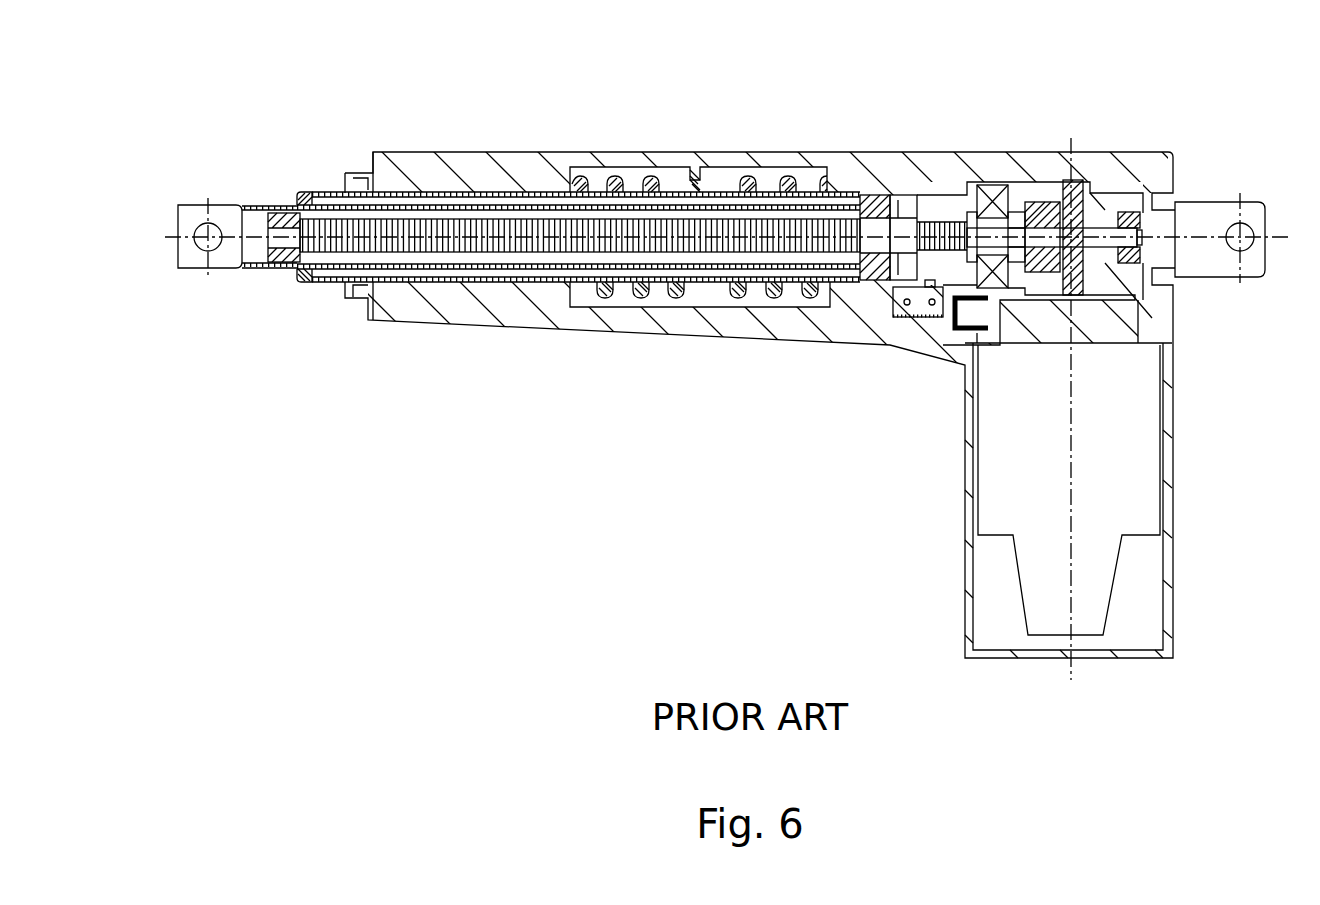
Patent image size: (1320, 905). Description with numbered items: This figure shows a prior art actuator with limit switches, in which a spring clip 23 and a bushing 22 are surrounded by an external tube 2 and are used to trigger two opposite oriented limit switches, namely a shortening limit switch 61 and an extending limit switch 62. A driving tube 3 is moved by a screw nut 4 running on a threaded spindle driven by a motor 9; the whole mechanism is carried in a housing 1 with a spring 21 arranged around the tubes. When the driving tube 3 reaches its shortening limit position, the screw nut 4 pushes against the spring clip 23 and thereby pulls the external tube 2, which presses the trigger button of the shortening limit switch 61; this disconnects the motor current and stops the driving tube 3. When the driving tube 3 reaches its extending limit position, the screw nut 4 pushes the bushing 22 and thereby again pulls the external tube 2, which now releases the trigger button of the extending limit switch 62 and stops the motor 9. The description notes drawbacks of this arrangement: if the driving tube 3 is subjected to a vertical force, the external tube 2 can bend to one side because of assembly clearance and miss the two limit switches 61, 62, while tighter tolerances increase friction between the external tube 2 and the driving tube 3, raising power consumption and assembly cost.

The housing 1 is at (431, 163).
The external tube 2 is at (526, 188).
The driving tube 3 is at (267, 203).
The screw nut 4 is at (874, 206).
The motor 9 is at (1009, 480).
The spring 21 is at (699, 188).
The bushing 22 is at (309, 196).
The spring clip 23 is at (893, 206).
The shortening limit switch 61 is at (919, 309).
The extending limit switch 62 is at (887, 292).